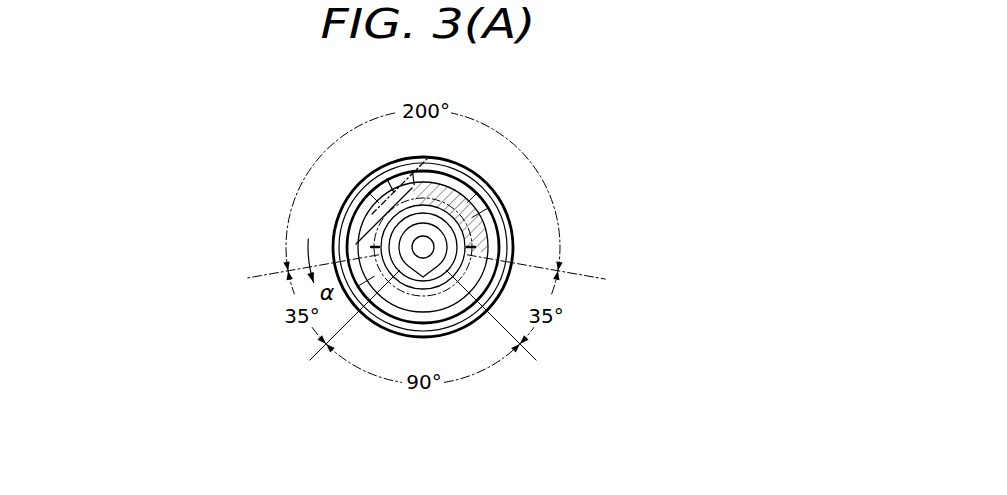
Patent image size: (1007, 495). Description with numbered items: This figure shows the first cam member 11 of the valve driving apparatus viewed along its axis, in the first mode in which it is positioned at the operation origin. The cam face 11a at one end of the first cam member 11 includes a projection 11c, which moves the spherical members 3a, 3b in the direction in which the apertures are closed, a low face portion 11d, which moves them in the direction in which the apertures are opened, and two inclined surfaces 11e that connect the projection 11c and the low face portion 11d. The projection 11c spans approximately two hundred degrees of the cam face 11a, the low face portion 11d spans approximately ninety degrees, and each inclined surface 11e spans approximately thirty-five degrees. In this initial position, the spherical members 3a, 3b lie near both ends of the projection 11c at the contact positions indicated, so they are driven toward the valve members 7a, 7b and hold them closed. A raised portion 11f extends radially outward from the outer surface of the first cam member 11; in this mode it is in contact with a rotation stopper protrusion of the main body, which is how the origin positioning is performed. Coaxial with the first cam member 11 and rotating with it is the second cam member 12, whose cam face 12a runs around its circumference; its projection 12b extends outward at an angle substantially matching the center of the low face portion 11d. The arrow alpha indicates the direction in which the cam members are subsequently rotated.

The first cam member 11 is at (560, 88).
The cam face 11a is at (365, 198).
The projection 11c is at (506, 212).
The low face portion 11d is at (385, 308).
The inclined surfaces 11e is at (475, 280).
The raised portion 11f is at (400, 180).
The second cam member 12 is at (433, 226).
The cam face 12a is at (455, 225).
The projection 12b is at (462, 303).
The spherical member 3a is at (373, 247).
The spherical member 3b is at (473, 247).
The valve member 7a is at (102, 346).
The valve member 7b is at (150, 389).